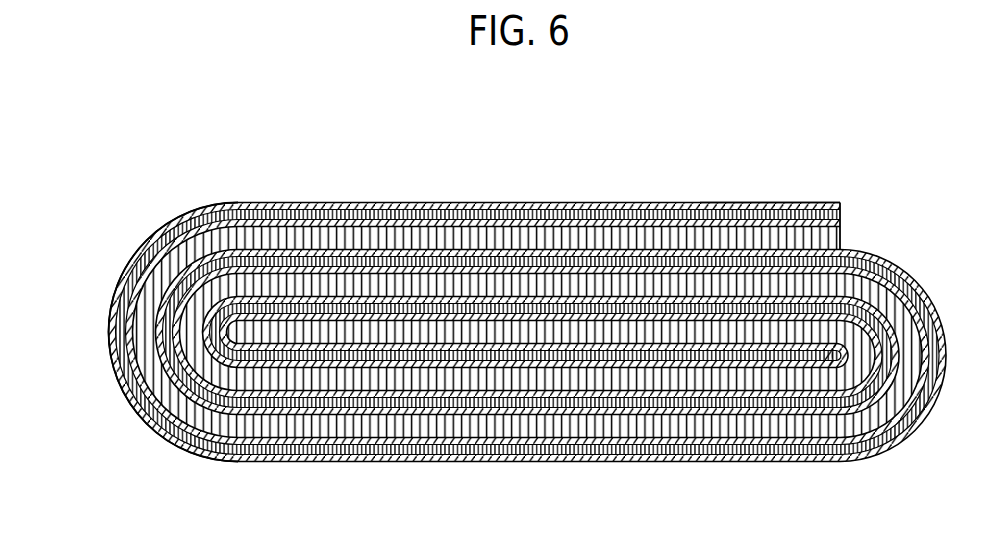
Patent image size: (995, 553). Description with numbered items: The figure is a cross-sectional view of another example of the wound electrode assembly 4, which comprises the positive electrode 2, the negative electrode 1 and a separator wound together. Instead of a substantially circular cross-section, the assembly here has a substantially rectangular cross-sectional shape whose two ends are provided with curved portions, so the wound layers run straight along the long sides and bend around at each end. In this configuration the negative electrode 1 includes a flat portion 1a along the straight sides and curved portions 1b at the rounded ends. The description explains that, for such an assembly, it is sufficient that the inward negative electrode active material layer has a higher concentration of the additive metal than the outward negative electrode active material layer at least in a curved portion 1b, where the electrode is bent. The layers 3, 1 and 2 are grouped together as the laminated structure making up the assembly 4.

The negative electrode 1 is at (762, 208).
The flat portion 1a is at (480, 211).
The curved portion 1b is at (124, 304).
The positive electrode 2 is at (755, 243).
The counter electrode plate 3 is at (718, 203).
The wound electrode assembly 4 is at (731, 123).